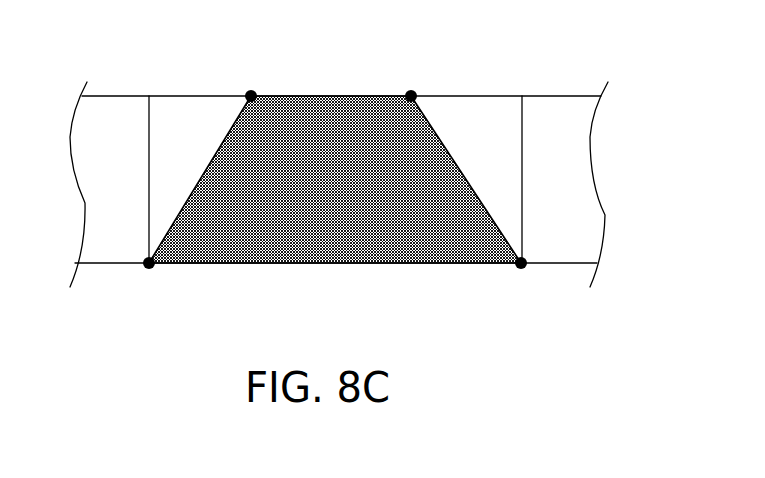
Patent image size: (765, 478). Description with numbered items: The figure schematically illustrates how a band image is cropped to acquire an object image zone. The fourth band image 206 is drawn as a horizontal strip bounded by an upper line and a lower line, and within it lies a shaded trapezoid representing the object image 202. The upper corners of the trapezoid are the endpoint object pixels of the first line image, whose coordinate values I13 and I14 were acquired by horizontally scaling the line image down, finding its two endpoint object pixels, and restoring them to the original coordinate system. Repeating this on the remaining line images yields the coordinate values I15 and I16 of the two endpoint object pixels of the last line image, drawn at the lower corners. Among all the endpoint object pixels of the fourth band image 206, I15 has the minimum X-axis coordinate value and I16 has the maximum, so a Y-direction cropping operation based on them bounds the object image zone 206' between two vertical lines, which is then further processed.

The fourth band image 206 is at (339, 161).
The object image zone 206' is at (190, 151).
The object image 202 is at (466, 179).
The coordinate value of endpoint object pixel I13 is at (252, 91).
The coordinate value of endpoint object pixel I14 is at (411, 91).
The coordinate value of endpoint object pixel I15 is at (147, 268).
The coordinate value of endpoint object pixel I16 is at (523, 268).